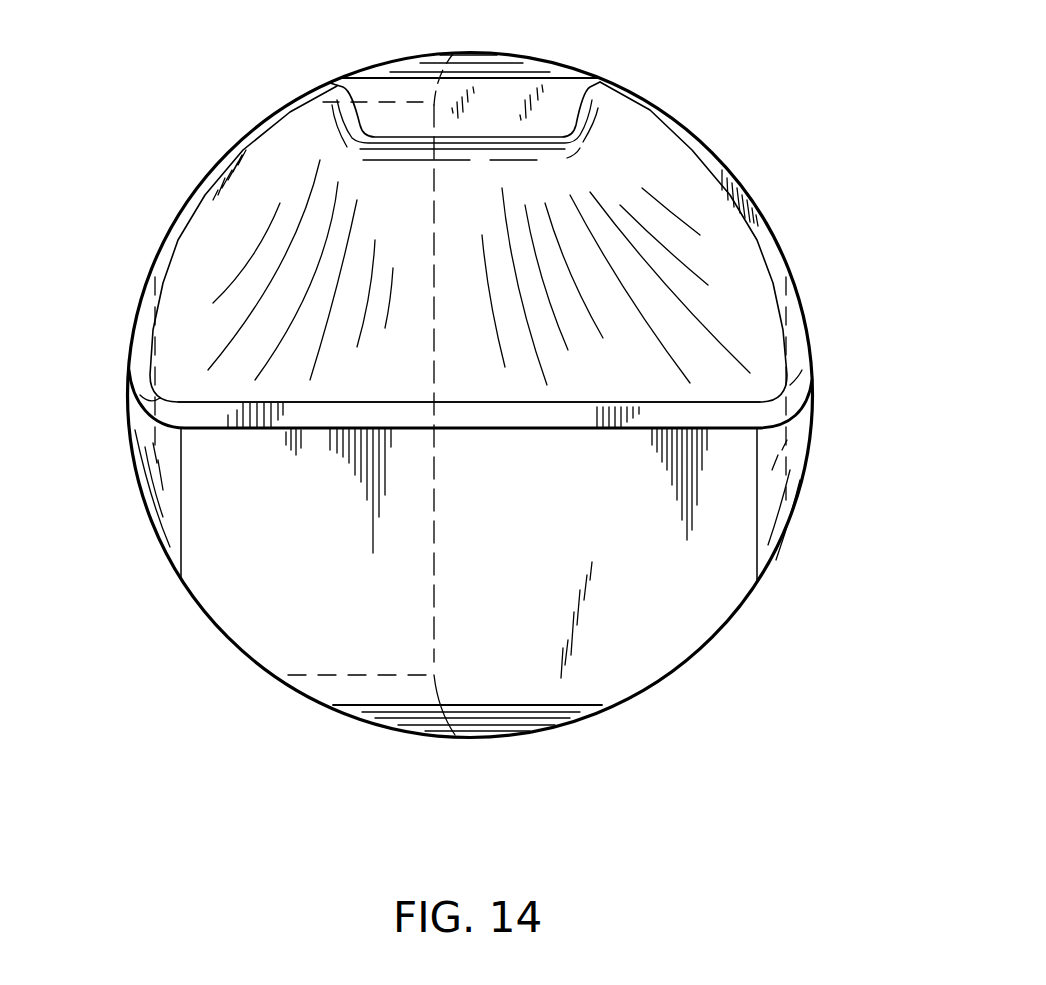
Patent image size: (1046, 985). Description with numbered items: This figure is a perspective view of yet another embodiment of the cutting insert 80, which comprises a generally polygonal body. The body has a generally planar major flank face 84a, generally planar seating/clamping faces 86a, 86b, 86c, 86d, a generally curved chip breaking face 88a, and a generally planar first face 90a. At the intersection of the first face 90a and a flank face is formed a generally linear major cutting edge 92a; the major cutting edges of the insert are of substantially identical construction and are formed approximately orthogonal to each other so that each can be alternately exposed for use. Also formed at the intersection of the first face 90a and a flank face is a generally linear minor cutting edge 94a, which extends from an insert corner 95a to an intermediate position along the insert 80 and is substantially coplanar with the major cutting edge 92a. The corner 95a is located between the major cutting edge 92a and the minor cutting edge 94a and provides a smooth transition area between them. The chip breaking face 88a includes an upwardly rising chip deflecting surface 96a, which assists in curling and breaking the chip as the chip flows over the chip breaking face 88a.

The cutting insert 80 is at (112, 108).
The major flank face 84a is at (232, 537).
The seating/clamping face 86a is at (688, 130).
The seating/clamping face 86b is at (240, 135).
The seating/clamping face 86c is at (250, 660).
The seating/clamping face 86d is at (660, 680).
The chip breaking face 88a is at (660, 230).
The first face 90a is at (555, 408).
The major cutting edge 92a is at (465, 428).
The minor cutting edge 94a is at (203, 197).
The corner 95a is at (128, 385).
The chip deflecting surface 96a is at (329, 96).